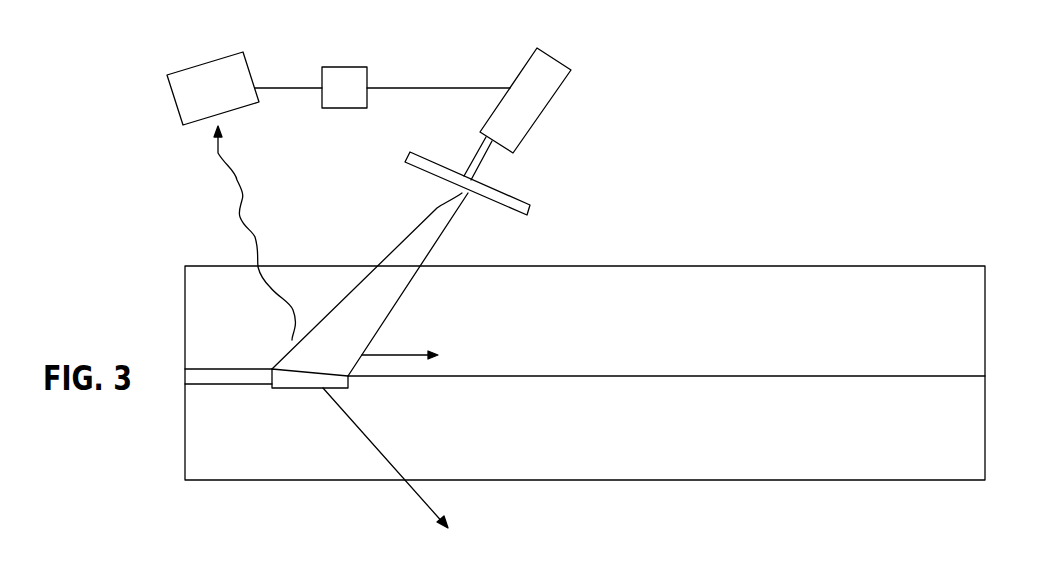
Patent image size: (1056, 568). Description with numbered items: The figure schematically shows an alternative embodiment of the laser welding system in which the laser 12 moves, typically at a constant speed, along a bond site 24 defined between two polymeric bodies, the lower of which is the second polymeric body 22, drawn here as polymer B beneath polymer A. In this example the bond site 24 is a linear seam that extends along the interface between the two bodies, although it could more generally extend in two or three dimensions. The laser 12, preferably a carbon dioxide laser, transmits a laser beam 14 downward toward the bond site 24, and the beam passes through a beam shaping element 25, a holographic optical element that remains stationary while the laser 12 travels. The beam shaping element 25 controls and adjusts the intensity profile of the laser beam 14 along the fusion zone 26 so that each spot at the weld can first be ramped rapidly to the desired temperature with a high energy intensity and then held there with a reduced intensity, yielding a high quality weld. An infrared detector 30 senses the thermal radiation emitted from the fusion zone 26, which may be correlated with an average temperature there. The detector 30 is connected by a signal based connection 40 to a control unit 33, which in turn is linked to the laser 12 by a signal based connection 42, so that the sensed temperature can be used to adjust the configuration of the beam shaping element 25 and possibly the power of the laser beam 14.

The laser 12 is at (572, 45).
The laser beam 14 is at (403, 238).
The second polymeric body 22 is at (985, 432).
The bond site 24 is at (532, 377).
The beam shaping element 25 is at (505, 208).
The fusion zone 26 is at (293, 378).
The infrared detector 30 is at (173, 100).
The controller 33 is at (360, 99).
The signal based connection 40 is at (293, 87).
The signal based connection 42 is at (442, 87).